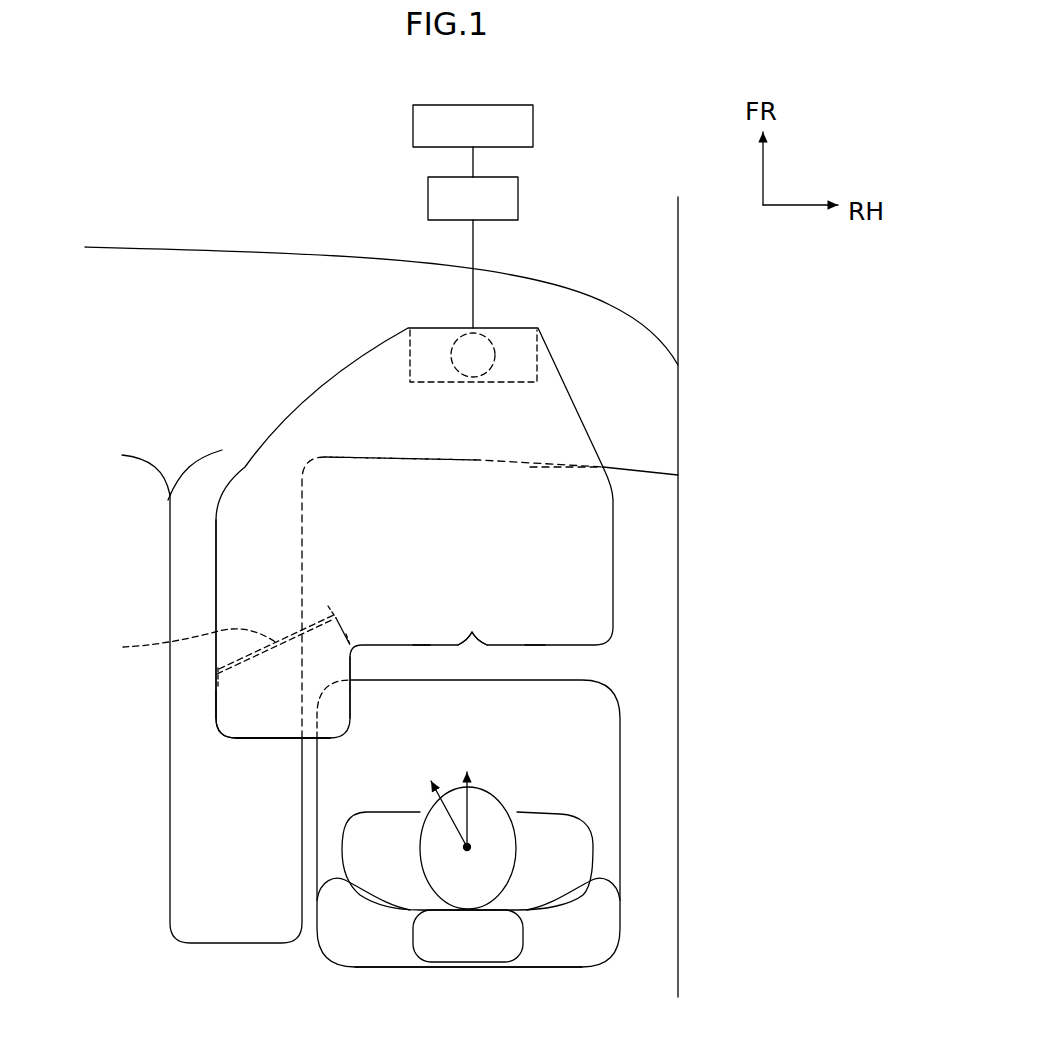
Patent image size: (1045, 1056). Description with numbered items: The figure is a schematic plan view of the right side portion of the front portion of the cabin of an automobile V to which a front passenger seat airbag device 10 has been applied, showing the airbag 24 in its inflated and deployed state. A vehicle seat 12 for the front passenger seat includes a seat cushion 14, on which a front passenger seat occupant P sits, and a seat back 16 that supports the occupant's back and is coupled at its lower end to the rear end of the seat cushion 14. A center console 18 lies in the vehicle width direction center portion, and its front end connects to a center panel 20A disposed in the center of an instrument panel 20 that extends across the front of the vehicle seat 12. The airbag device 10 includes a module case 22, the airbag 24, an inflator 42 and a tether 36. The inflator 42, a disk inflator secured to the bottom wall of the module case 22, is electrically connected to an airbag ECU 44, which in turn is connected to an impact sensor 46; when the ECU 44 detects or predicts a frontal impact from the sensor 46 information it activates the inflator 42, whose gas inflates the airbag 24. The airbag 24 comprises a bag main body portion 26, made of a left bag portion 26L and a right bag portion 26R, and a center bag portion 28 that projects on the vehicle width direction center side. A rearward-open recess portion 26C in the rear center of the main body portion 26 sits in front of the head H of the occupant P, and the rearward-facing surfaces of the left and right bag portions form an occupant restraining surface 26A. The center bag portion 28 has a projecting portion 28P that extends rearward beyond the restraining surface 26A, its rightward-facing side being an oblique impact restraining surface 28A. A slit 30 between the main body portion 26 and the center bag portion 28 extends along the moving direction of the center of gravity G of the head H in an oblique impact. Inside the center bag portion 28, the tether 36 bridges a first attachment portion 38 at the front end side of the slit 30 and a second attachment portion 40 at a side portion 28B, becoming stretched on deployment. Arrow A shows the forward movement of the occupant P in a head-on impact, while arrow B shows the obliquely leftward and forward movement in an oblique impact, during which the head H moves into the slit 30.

The front passenger seat airbag device 10 is at (367, 298).
The vehicle seat 12 is at (412, 971).
The seat cushion 14 is at (620, 765).
The seat back 16 is at (548, 968).
The center console 18 is at (170, 545).
The instrument panel 20 is at (562, 303).
The center panel 20A is at (168, 497).
The module case 22 is at (540, 362).
The airbag 24 is at (306, 389).
The bag main body portion 26 is at (775, 510).
The right bag portion 26R is at (553, 532).
The left bag portion 26L is at (432, 600).
The occupant restraining surface 26A is at (413, 647).
The recess portion 26C is at (470, 647).
The center bag portion 28 is at (255, 575).
The oblique impact restraining surface 28A is at (350, 705).
The side portion 28B is at (215, 702).
The projecting portion 28P is at (282, 718).
The slit 30 is at (365, 660).
The tether 36 is at (182, 645).
The first attachment portion 38 is at (352, 598).
The second attachment portion 40 is at (204, 681).
The inflator 42 is at (450, 358).
The airbag ECU 44 is at (518, 199).
The impact sensor 46 is at (533, 128).
The arrow A is at (465, 803).
The arrow B is at (447, 818).
The center of gravity G is at (475, 847).
The head H is at (418, 868).
The front passenger seat occupant P is at (600, 842).
The automobile V is at (746, 338).